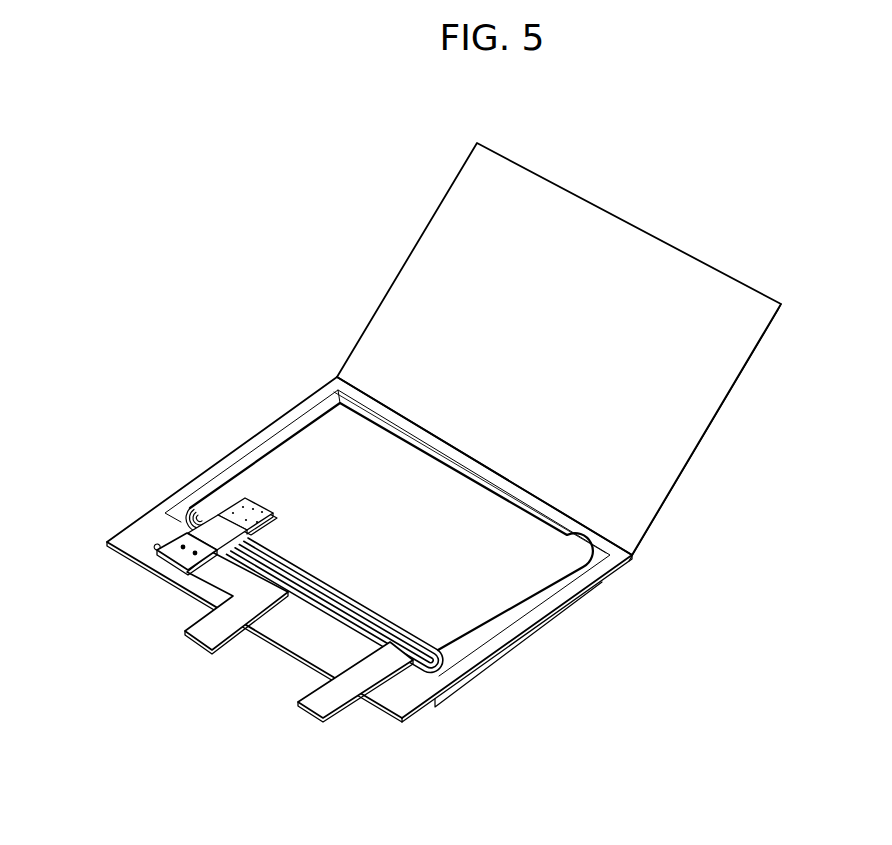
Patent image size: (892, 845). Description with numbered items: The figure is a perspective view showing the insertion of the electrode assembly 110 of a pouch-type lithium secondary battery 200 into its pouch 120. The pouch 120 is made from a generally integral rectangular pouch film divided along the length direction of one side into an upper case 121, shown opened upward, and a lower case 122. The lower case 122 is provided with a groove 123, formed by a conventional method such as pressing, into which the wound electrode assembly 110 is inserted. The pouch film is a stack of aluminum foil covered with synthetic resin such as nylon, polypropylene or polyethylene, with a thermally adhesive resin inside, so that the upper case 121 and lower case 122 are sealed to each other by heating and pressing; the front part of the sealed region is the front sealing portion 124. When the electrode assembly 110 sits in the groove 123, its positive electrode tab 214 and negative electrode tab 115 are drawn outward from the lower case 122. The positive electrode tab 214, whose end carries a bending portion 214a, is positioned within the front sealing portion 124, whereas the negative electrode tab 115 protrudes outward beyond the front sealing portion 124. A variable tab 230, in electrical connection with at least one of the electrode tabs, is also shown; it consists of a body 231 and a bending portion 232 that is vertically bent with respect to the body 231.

The pouch-type lithium secondary battery 200 is at (268, 258).
The electrode assembly 110 is at (263, 442).
The negative electrode tab 115 is at (335, 700).
The pouch 120 is at (444, 432).
The upper case 121 is at (638, 513).
The lower case 122 is at (533, 633).
The groove 123 is at (540, 589).
The front sealing portion 124 is at (313, 642).
The positive electrode tab 214 is at (203, 514).
The bending portion 214a is at (185, 537).
The variable tab 230 is at (173, 611).
The body 231 is at (204, 637).
The bending portion 232 is at (162, 545).